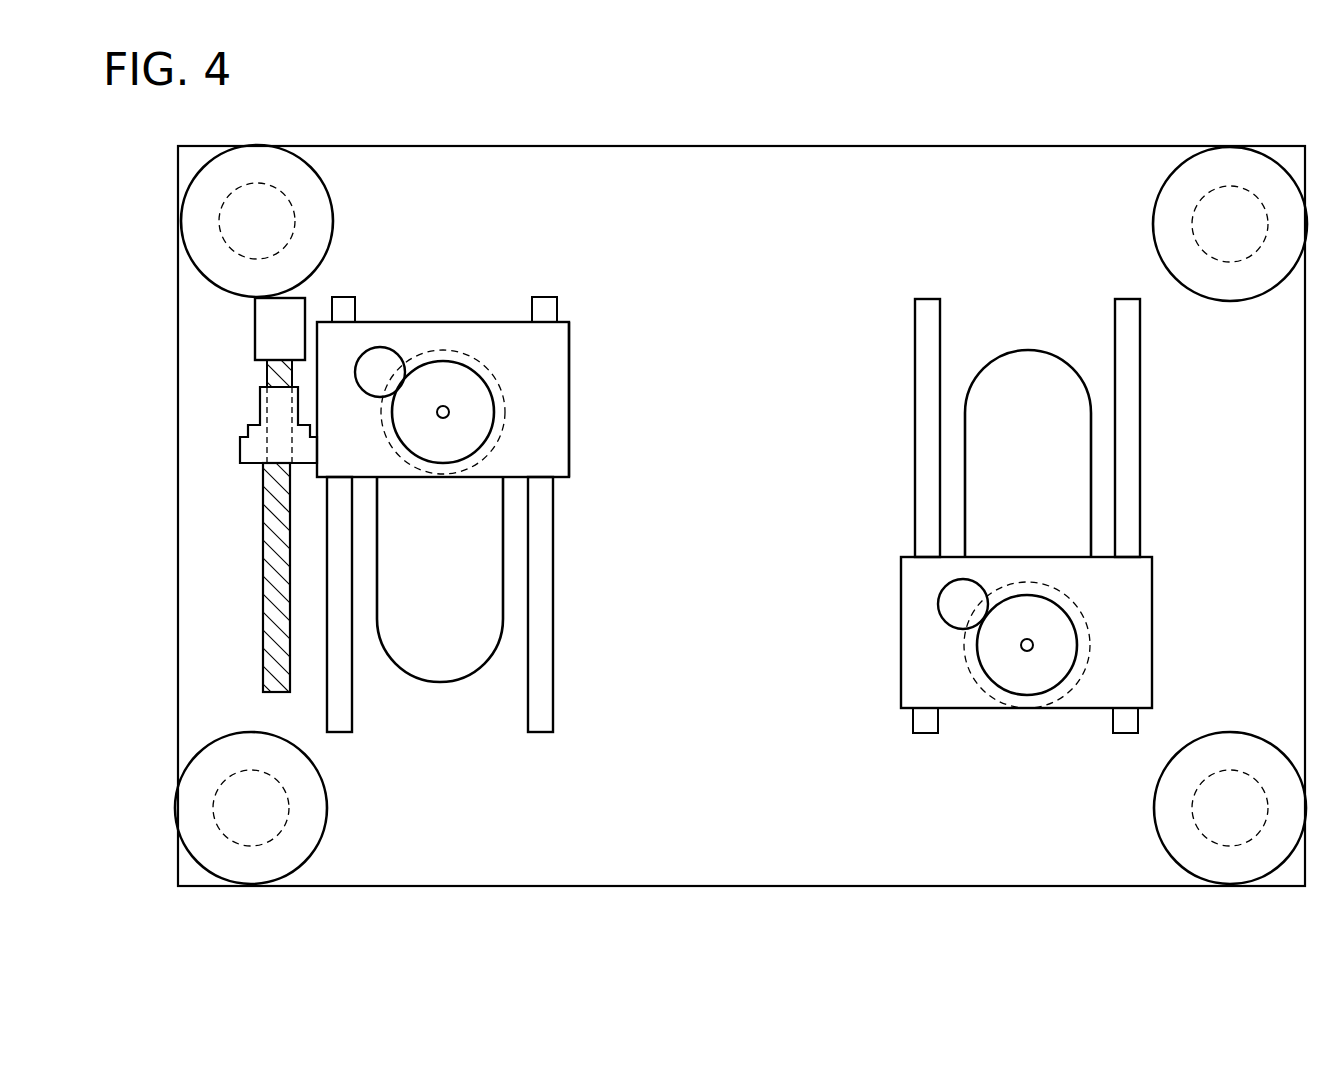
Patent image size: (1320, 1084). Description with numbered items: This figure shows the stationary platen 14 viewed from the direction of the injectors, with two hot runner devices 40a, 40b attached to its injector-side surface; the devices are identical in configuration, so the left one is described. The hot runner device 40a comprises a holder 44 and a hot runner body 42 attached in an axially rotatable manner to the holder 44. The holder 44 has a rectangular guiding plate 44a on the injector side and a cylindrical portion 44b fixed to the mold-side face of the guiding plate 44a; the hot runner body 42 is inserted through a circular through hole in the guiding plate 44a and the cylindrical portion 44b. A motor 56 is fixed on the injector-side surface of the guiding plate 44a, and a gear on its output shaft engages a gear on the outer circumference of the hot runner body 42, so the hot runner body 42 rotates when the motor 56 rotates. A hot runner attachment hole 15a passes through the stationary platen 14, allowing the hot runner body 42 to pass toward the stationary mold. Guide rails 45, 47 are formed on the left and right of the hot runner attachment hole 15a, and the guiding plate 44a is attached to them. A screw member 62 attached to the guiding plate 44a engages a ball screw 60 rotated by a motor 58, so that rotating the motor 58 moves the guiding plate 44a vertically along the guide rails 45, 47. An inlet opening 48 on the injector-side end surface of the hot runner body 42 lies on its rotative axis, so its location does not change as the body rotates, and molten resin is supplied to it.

The stationary platen 14 is at (908, 146).
The hot runner attachment hole 15a is at (470, 657).
The hot runner device 40a is at (400, 512).
The hot runner device 40b is at (993, 740).
The hot runner body 42 is at (463, 362).
The holder 44 is at (450, 320).
The guiding plate 44a is at (569, 362).
The cylindrical portion 44b is at (503, 432).
The guide rail 45 is at (553, 683).
The guide rail 47 is at (327, 715).
The inlet opening 48 is at (443, 418).
The motor 56 is at (371, 348).
The motor 58 is at (255, 328).
The ball screw 60 is at (263, 617).
The screw member 62 is at (250, 465).